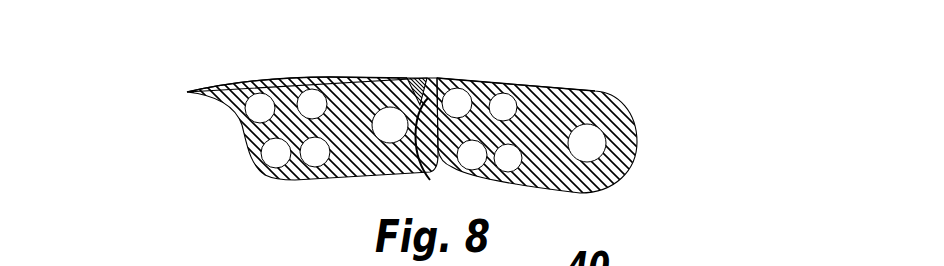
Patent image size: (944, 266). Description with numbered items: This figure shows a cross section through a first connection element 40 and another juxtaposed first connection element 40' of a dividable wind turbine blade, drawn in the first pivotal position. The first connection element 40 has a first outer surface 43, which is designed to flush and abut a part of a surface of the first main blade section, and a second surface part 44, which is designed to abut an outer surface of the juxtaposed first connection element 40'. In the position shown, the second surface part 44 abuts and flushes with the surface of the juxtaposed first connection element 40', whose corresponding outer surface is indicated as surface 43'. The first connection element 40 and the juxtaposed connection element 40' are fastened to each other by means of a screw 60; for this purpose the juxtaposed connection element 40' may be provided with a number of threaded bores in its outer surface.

The juxtaposed first connection element 40' is at (248, 128).
The first connection element 40 is at (612, 135).
The top surface of first link segment 43' is at (291, 56).
The first outer surface 43 is at (561, 59).
The screw 60 is at (420, 78).
The second surface part 44 is at (431, 160).